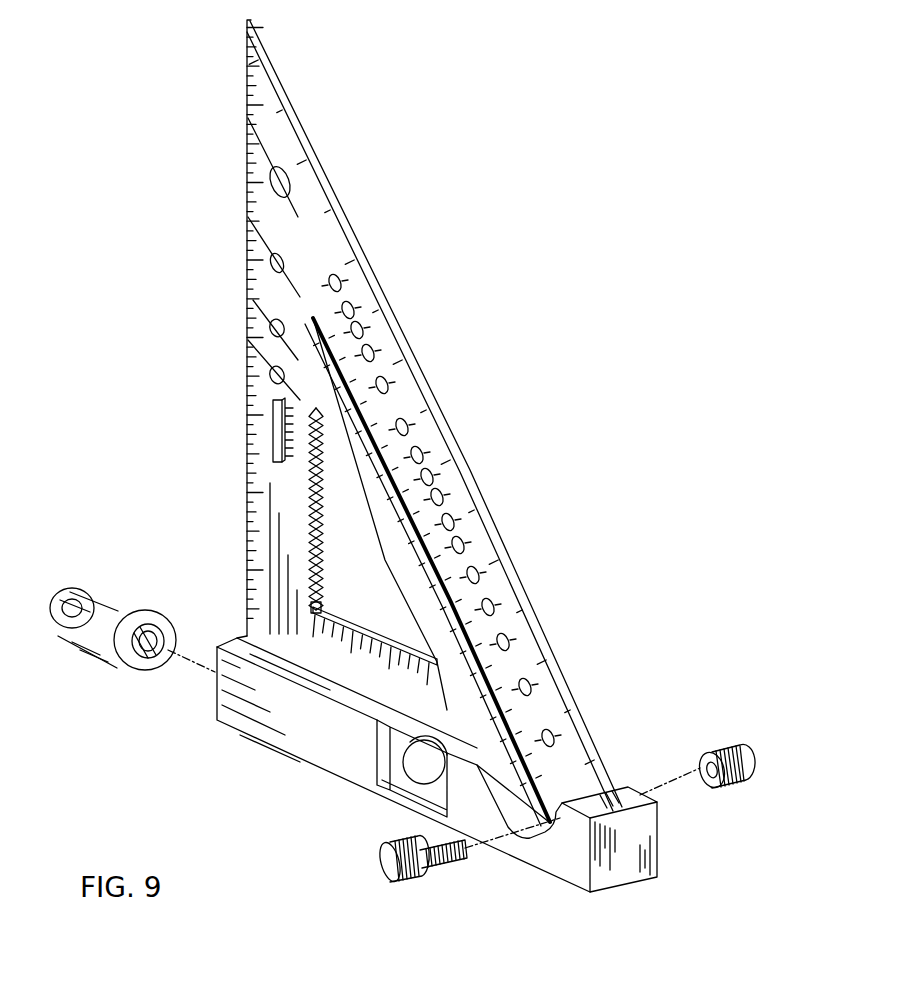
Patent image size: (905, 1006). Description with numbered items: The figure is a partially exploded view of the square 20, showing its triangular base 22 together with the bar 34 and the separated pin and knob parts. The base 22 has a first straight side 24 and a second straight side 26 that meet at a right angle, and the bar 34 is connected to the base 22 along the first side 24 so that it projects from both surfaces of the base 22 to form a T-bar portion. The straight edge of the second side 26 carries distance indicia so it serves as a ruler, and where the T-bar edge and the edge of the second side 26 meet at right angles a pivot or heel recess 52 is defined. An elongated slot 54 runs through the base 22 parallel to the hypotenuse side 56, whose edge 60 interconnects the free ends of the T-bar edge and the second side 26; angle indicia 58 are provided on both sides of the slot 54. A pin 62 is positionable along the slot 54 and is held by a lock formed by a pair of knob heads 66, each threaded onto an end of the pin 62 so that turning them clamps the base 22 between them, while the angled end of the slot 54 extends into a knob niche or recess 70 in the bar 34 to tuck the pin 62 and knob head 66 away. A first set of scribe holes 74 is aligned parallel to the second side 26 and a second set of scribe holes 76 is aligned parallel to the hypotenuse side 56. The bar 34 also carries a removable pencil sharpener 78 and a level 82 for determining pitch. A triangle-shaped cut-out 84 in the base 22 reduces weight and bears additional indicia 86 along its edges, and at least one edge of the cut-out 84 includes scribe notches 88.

The square 20 is at (465, 240).
The triangular base 22 is at (285, 82).
The first straight side 24 is at (337, 684).
The second straight side 26 is at (247, 203).
The bar 34 is at (300, 760).
The pivot or heel recess 52 is at (240, 630).
The elongated slot 54 is at (313, 318).
The hypotenuse side 56 is at (445, 423).
The angle indicia 58 is at (377, 408).
The edge of the hypotenuse side 60 is at (483, 500).
The pin 62 is at (453, 858).
The knob head 66 is at (378, 872).
The knob niche or recess 70 is at (527, 840).
The first set of scribe holes 74 is at (288, 173).
The second set of scribe holes 76 is at (373, 350).
The pencil sharpener 78 is at (90, 655).
The level 82 is at (410, 775).
The triangle-shaped cut-out 84 is at (348, 622).
The additional indicia 86 is at (438, 700).
The scribe notches 88 is at (318, 507).